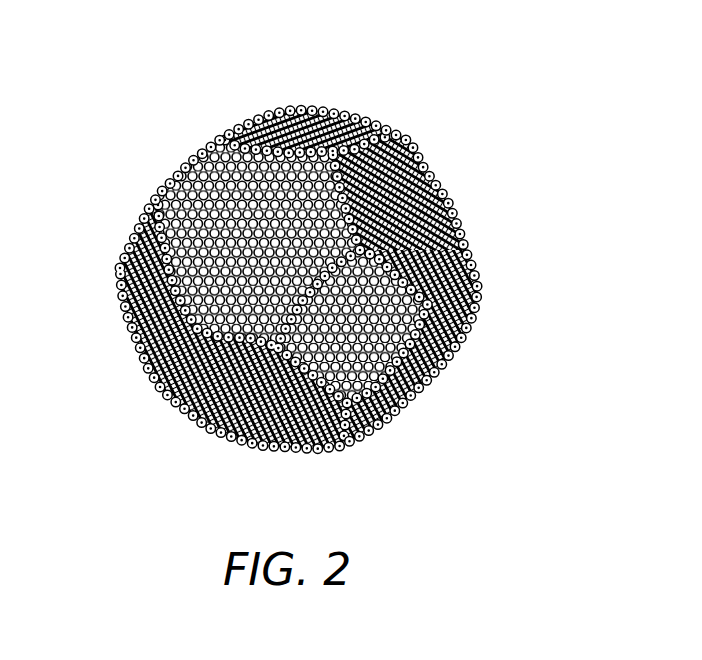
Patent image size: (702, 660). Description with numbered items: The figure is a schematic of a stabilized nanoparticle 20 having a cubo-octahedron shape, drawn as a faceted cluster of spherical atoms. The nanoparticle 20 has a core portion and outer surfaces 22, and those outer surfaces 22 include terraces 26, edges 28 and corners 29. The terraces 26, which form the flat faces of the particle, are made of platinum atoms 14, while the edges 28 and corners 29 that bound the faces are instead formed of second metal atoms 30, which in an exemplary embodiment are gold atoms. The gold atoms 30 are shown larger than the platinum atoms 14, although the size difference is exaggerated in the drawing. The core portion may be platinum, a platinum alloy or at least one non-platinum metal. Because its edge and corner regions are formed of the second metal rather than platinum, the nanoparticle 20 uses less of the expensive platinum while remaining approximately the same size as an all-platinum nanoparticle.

The platinum atoms 14 is at (306, 128).
The stabilized nanoparticle 20 is at (538, 126).
The outer surfaces 22 is at (156, 177).
The terraces 26 is at (328, 127).
The edges 28 is at (423, 162).
The corners 29 is at (453, 218).
The second metal atoms 30 is at (470, 242).